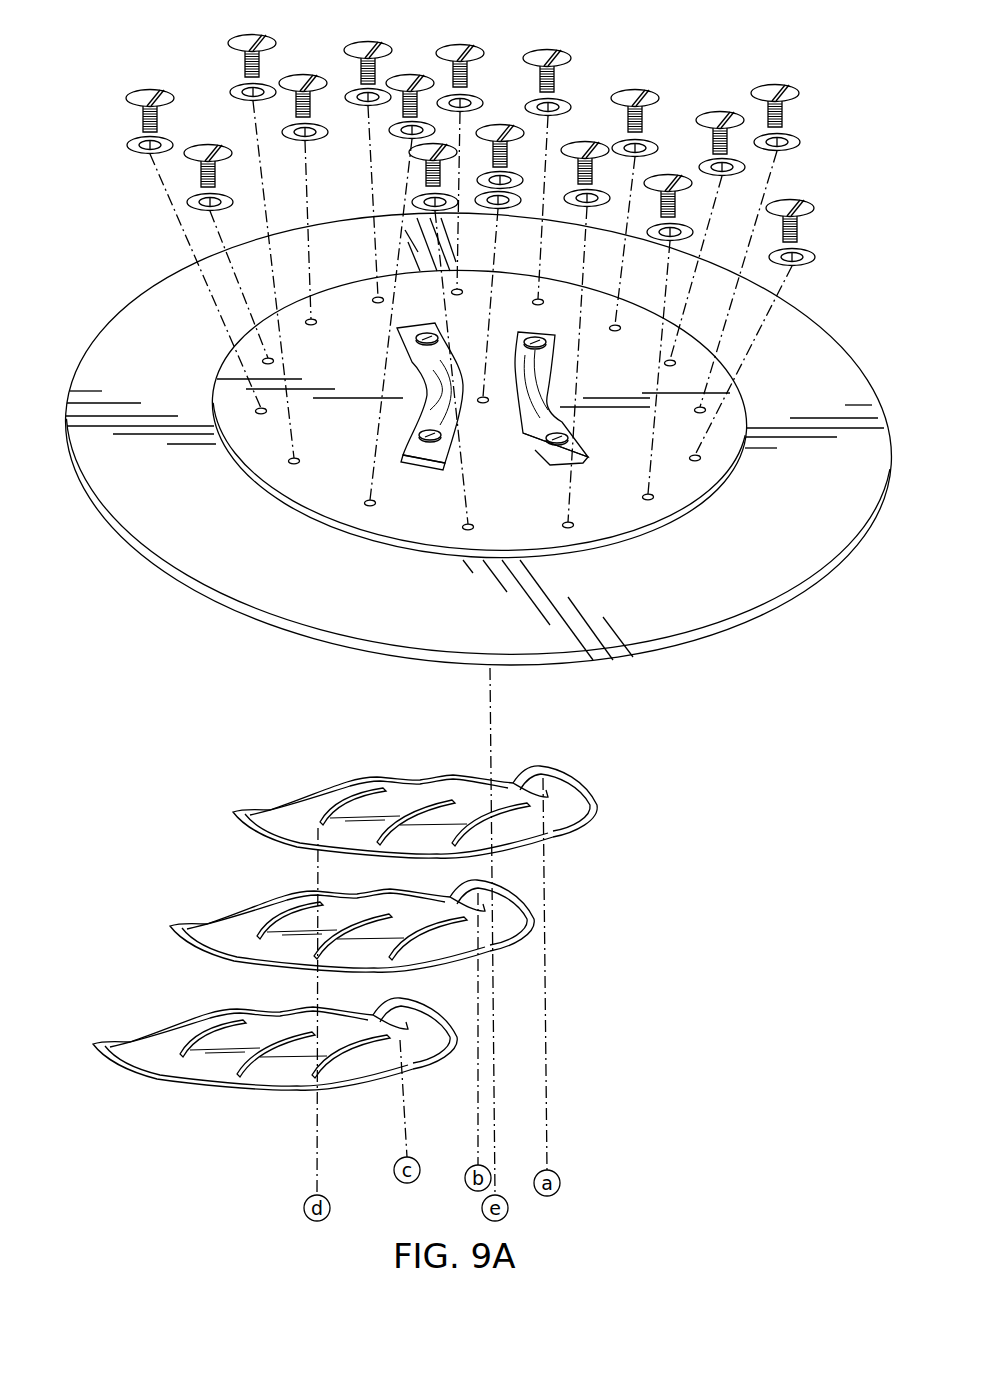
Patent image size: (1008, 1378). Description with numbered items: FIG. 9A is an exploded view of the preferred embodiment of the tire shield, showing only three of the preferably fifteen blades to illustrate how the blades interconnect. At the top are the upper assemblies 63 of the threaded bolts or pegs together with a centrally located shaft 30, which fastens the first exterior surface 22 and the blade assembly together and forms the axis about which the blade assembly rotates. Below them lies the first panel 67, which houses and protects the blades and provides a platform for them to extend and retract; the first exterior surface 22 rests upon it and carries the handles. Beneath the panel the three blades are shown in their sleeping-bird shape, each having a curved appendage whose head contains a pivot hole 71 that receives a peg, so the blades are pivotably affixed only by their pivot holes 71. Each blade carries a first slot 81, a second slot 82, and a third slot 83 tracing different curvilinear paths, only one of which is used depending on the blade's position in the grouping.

The first exterior surface 22 is at (418, 537).
The shaft 30 is at (494, 128).
The upper assembly 63 is at (353, 45).
The first panel 67 is at (833, 380).
The pivot hole 71 is at (540, 777).
The first slot 81 is at (313, 1078).
The second slot 82 is at (320, 952).
The third slot 83 is at (317, 830).